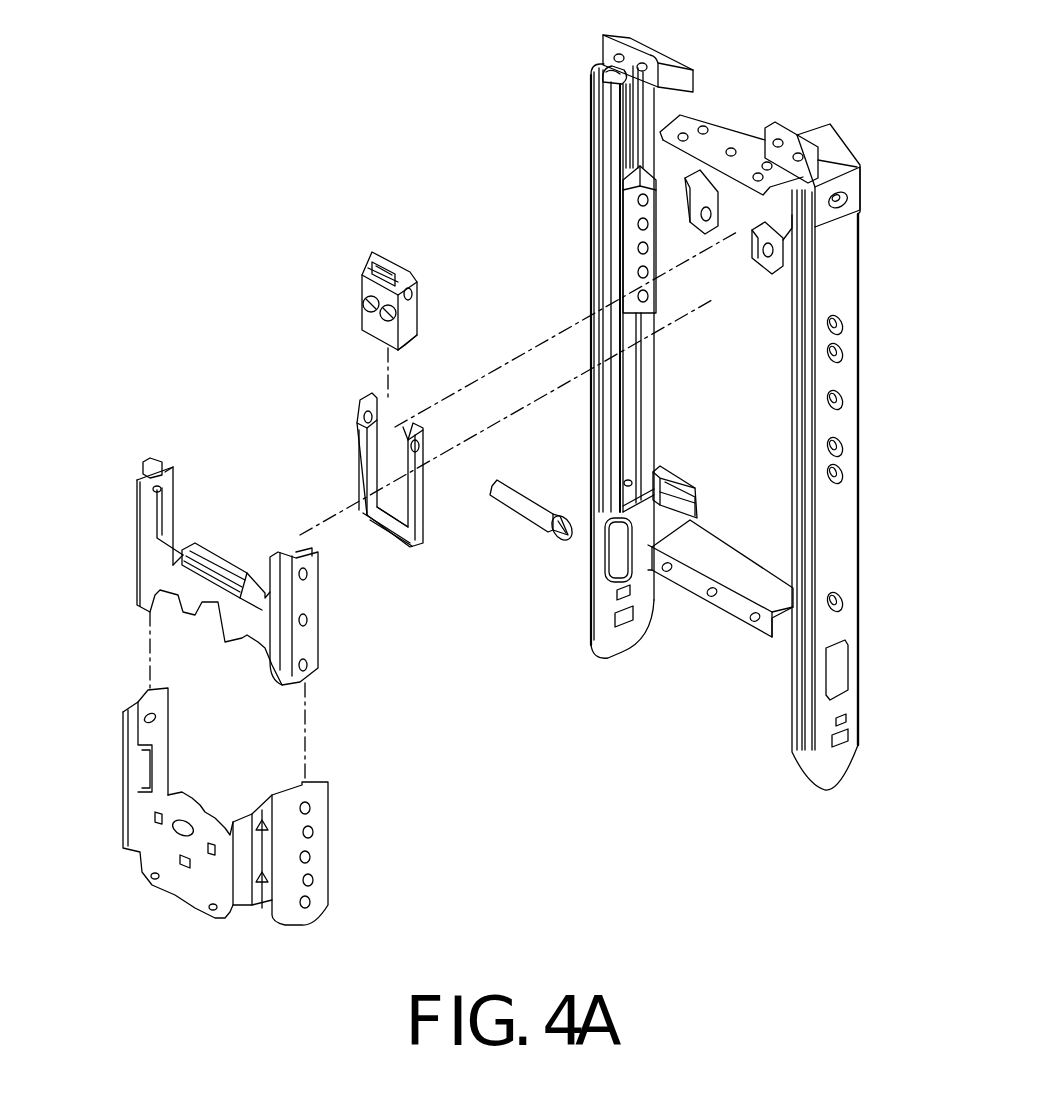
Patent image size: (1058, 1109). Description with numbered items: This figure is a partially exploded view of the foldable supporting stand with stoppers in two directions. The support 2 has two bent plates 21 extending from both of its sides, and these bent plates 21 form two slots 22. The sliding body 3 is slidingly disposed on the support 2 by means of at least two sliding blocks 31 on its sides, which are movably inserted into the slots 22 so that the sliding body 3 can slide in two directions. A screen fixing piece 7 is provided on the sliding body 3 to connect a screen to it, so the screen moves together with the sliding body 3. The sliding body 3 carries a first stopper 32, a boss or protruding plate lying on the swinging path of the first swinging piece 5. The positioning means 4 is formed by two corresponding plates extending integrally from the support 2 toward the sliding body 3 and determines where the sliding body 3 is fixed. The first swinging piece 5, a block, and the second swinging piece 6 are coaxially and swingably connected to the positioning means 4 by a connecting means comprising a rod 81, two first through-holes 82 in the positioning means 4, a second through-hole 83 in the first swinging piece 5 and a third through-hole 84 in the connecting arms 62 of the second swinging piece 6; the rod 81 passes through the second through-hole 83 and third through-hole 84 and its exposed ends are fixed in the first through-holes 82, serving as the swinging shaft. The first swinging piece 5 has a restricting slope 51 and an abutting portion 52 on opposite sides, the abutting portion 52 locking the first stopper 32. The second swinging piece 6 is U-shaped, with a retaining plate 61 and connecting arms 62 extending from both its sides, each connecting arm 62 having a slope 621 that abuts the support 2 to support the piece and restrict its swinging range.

The support 2 is at (866, 266).
The bent plates 21 is at (605, 82).
The slots 22 is at (627, 137).
The sliding body 3 is at (132, 462).
The sliding blocks 31 is at (635, 262).
The first stopper 32 is at (168, 578).
The positioning means 4 is at (758, 226).
The first swinging piece 5 is at (360, 248).
The restricting slope 51 is at (405, 280).
The abutting portion 52 is at (375, 345).
The second swinging piece 6 is at (348, 400).
The retaining plate 61 is at (390, 530).
The connecting arms 62 is at (365, 492).
The slope 621 is at (412, 440).
The screen fixing piece 7 is at (338, 841).
The rod 81 is at (533, 510).
The first through-holes 82 is at (690, 200).
The second through-hole 83 is at (415, 295).
The third through-hole 84 is at (365, 440).